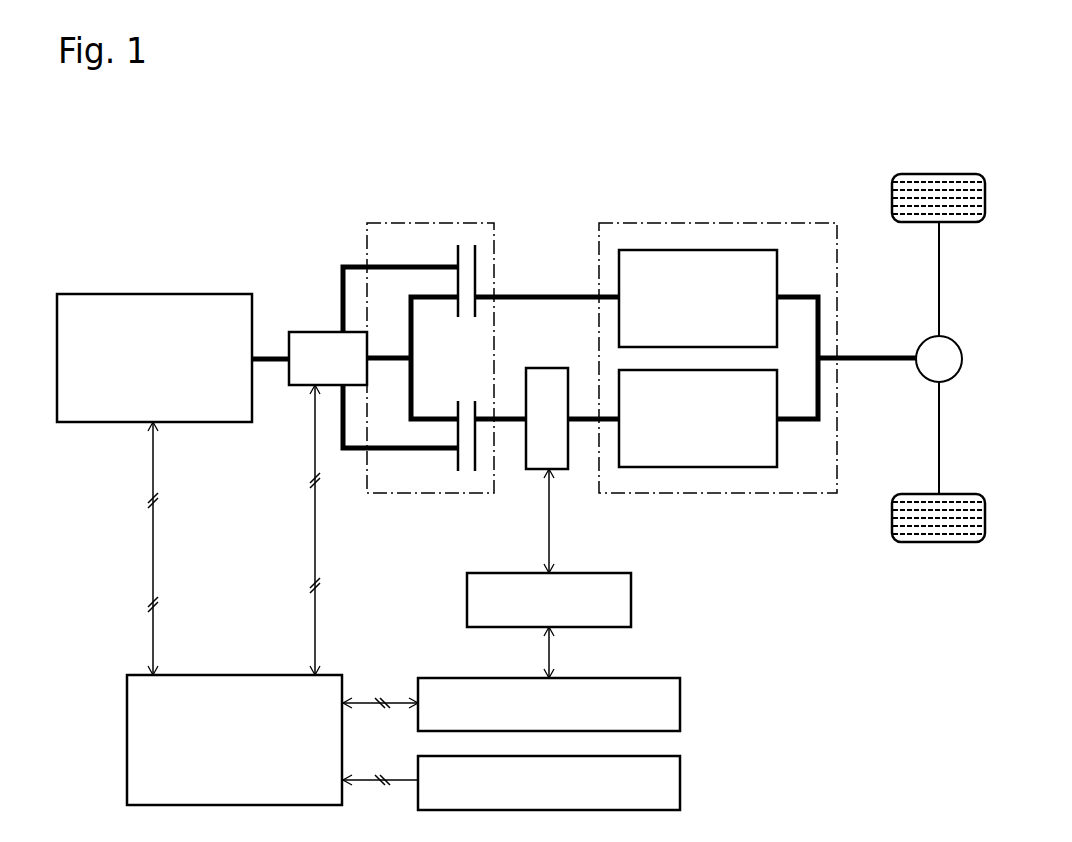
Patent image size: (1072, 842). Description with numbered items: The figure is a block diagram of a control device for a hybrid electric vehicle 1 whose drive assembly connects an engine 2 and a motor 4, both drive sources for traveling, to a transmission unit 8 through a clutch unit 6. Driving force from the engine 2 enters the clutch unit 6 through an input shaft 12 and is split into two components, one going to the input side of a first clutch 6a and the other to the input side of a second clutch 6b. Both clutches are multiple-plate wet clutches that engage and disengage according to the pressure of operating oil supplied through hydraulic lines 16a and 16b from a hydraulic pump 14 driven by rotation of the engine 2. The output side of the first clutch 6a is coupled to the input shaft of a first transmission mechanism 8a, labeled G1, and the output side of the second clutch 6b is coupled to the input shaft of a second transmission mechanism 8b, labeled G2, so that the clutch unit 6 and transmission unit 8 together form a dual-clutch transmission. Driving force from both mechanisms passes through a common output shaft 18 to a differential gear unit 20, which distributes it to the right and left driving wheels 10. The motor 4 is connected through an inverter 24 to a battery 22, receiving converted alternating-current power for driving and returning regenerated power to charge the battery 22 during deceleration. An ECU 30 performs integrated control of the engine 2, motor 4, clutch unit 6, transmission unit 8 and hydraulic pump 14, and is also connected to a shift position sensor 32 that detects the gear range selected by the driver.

The vehicle 1 is at (850, 178).
The engine 2 is at (101, 294).
The motor 4 is at (547, 367).
The clutch unit 6 is at (365, 238).
The first clutch 6a is at (459, 248).
The second clutch 6b is at (458, 472).
The transmission unit 8 is at (663, 221).
The first transmission mechanism 8a is at (748, 249).
The second transmission mechanism 8b is at (745, 468).
The driving wheels 10 is at (986, 196).
The input shaft 12 is at (270, 356).
The hydraulic pump 14 is at (318, 330).
The hydraulic line 16a is at (398, 265).
The hydraulic line 16b is at (398, 452).
The common output shaft 18 is at (881, 355).
The differential gear unit 20 is at (963, 359).
The battery 22 is at (683, 700).
The inverter 24 is at (634, 596).
The ECU 30 is at (132, 673).
The shift position sensor 32 is at (683, 780).